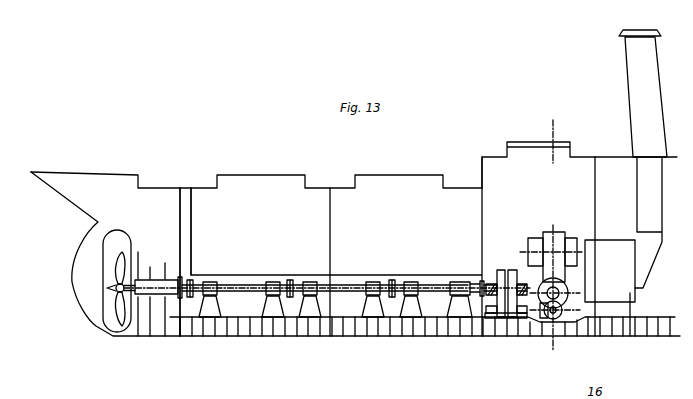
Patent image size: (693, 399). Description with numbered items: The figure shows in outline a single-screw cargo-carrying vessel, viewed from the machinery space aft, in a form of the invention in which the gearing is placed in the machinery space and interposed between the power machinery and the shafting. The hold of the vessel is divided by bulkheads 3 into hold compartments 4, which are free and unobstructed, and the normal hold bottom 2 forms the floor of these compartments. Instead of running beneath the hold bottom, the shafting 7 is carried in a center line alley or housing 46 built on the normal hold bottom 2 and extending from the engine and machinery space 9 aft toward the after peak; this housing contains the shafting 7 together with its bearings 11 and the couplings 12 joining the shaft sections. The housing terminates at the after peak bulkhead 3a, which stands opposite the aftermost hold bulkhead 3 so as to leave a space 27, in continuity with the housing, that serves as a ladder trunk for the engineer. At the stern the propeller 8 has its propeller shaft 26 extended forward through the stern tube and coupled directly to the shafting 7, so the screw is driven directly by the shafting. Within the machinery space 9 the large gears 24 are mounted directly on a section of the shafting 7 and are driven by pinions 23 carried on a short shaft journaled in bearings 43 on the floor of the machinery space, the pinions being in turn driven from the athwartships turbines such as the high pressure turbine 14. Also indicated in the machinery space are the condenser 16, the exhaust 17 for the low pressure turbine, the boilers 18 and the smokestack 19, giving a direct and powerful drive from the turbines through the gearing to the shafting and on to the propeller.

The normal hold bottom 2 is at (248, 318).
The bulkheads 3 is at (191, 214).
The after peak bulkhead 3a is at (177, 258).
The hold compartments 4 is at (550, 318).
The shafting 7 is at (348, 287).
The propeller 8 is at (117, 312).
The engine and machinery space 9 is at (579, 165).
The bearings 11 is at (410, 283).
The couplings 12 is at (393, 297).
The high pressure turbine 14 is at (552, 236).
The condenser 16 is at (570, 240).
The exhaust for the low pressure turbine 17 is at (552, 235).
The boilers 18 is at (610, 248).
The smokestack 19 is at (648, 80).
The pinions 23 is at (510, 318).
The large gears 24 is at (512, 270).
The propeller shaft 26 is at (165, 280).
The space 27 is at (181, 239).
The bearings 43 is at (490, 313).
The center line alley or housing 46 is at (280, 275).